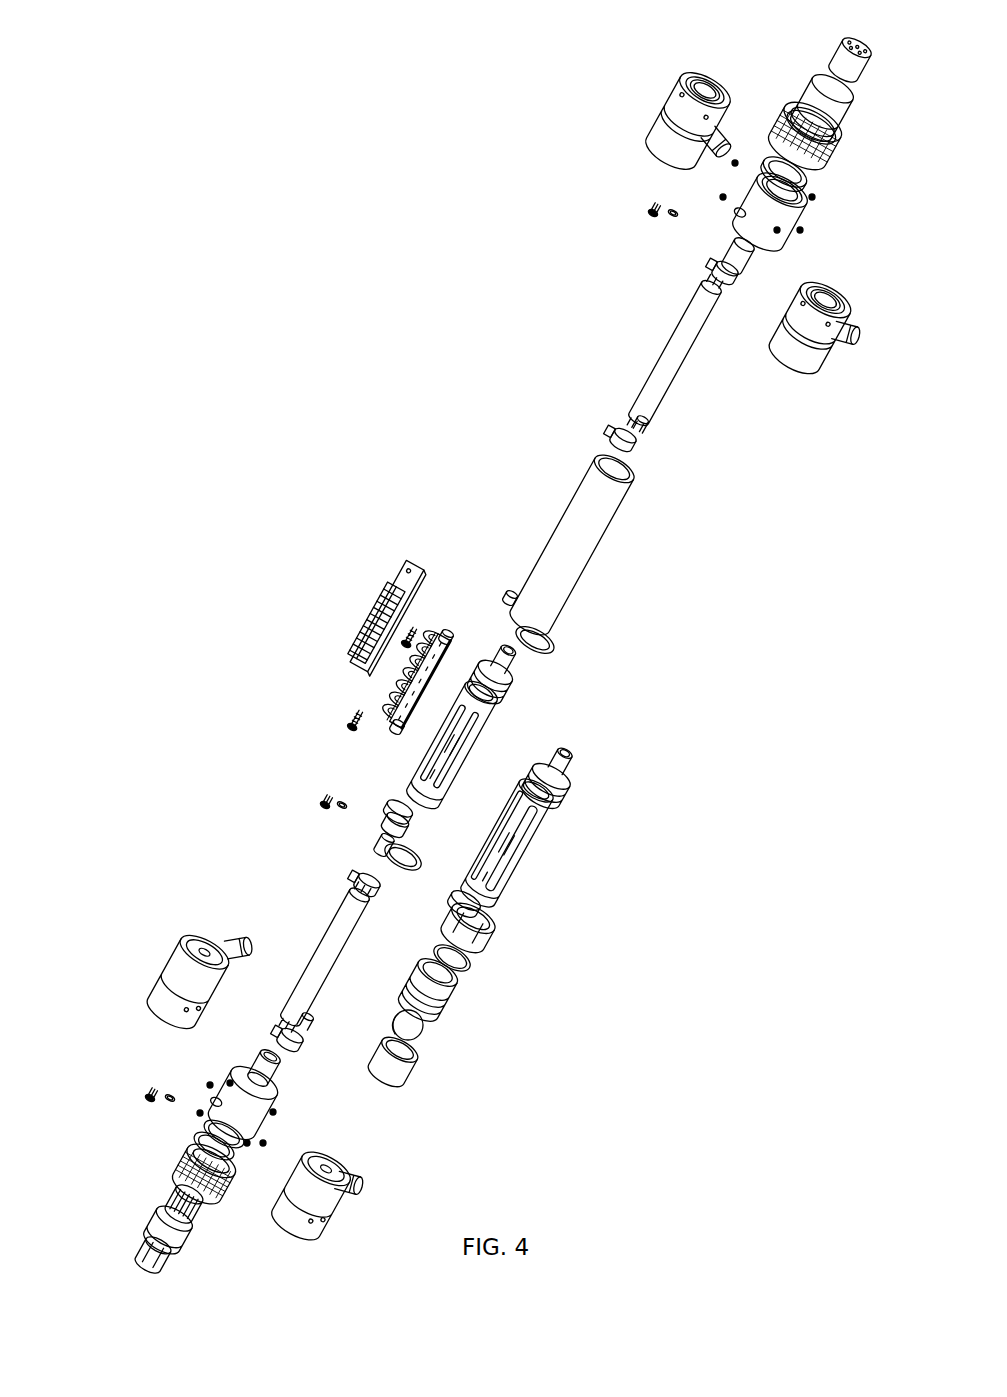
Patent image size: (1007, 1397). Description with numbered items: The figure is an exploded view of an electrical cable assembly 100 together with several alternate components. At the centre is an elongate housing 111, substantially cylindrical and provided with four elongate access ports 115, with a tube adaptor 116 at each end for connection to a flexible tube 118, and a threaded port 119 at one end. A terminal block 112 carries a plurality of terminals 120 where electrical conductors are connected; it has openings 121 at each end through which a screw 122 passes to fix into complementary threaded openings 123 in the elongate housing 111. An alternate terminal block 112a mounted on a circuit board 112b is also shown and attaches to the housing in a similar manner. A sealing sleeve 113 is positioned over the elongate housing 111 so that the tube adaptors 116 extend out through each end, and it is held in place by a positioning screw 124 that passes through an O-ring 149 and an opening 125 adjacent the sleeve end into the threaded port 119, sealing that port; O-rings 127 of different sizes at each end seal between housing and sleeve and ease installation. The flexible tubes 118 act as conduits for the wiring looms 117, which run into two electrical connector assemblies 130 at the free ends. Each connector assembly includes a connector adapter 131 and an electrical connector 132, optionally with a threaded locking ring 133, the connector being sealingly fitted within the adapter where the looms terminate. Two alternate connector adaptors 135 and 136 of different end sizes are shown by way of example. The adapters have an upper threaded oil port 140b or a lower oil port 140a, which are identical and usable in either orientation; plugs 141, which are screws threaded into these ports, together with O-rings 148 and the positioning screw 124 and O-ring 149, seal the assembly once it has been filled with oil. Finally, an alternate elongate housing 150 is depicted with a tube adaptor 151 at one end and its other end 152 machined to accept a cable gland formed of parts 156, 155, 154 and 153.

The electrical cable assembly 100 is at (223, 320).
The elongate housing 111 is at (507, 692).
The terminal block 112 is at (413, 730).
The alternate terminal block 112a is at (380, 598).
The circuit board 112b is at (403, 570).
The sealing sleeve 113 is at (560, 498).
The elongate access ports 115 is at (402, 808).
The tube adaptor 116 is at (507, 663).
The wiring looms 117 is at (362, 880).
The flexible tube 118 is at (313, 948).
The threaded port 119 is at (460, 908).
The terminals 120 is at (398, 715).
The openings 121 is at (397, 730).
The screw 122 is at (350, 714).
The threaded openings 123 is at (445, 780).
The positioning screw 124 is at (320, 800).
The opening 125 is at (510, 592).
The O-rings 127 is at (403, 857).
The electrical connector assemblies 130 is at (80, 1080).
The connector adapter 131 is at (270, 1097).
The electrical connector 132 is at (165, 1232).
The threaded locking ring 133 is at (212, 1197).
The alternate connector adaptor 135 is at (323, 1220).
The alternate connector adaptor 136 is at (180, 963).
The lower oil port 140a is at (205, 943).
The upper threaded oil port 140b is at (648, 157).
The plugs 141 is at (147, 1092).
The O-rings 148 is at (168, 1106).
The O-ring 149 is at (338, 800).
The alternate elongate housing 150 is at (525, 867).
The tube adaptor 151 is at (567, 770).
The other end 152 is at (493, 942).
The cable gland part 153 is at (462, 968).
The cable gland part 154 is at (450, 995).
The cable gland part 155 is at (423, 1035).
The cable gland part 156 is at (405, 1070).